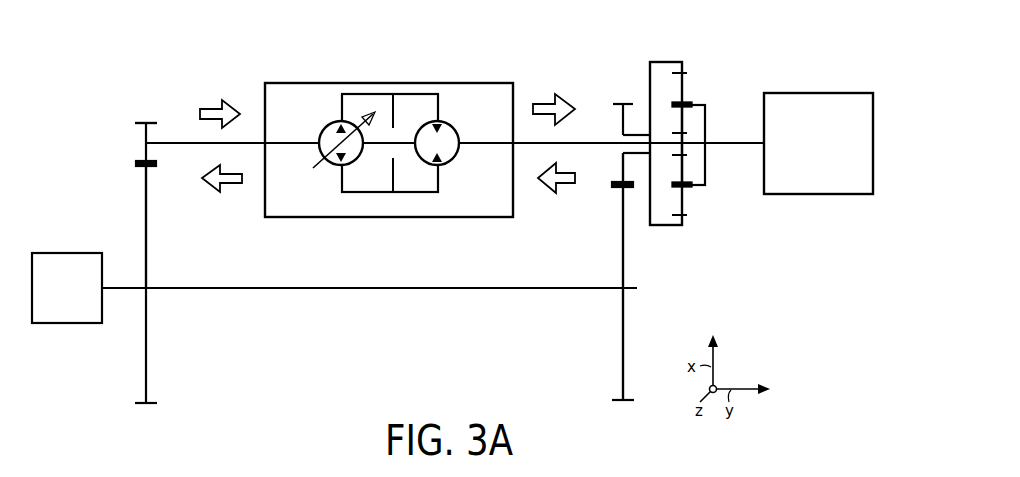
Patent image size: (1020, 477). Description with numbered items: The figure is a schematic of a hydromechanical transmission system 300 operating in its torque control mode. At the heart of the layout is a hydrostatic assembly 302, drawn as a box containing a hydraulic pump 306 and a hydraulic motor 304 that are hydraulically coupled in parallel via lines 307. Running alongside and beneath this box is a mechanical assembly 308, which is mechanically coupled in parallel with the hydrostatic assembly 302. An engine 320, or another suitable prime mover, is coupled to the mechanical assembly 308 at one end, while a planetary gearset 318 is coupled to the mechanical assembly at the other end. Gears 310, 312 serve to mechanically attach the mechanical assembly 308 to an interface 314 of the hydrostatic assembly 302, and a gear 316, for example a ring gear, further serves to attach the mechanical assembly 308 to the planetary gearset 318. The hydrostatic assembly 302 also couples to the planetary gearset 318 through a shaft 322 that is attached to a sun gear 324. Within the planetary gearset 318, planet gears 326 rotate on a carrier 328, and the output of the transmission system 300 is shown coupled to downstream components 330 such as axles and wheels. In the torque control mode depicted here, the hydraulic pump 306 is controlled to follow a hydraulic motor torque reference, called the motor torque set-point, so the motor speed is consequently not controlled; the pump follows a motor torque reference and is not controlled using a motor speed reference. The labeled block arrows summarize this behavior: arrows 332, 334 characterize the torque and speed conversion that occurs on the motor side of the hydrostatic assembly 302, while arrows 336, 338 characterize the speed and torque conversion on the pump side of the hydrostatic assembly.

The transmission system 300 is at (88, 46).
The hydrostatic assembly 302 is at (271, 83).
The hydraulic motor 304 is at (455, 159).
The hydraulic pump 306 is at (326, 129).
The lines 307 is at (390, 143).
The mechanical assembly 308 is at (114, 368).
The gear 310 is at (150, 122).
The gear 312 is at (148, 219).
The interface 314 is at (172, 142).
The gear 316 is at (665, 227).
The planetary gearset 318 is at (663, 42).
The engine 320 is at (38, 254).
The shaft 322 is at (600, 140).
The sun gear 324 is at (681, 136).
The planet gears 326 is at (681, 203).
The carrier 328 is at (700, 104).
The downstream components 330 is at (770, 93).
The arrow 332 is at (565, 111).
The arrow 334 is at (543, 177).
The arrow 336 is at (203, 114).
The arrow 338 is at (240, 173).